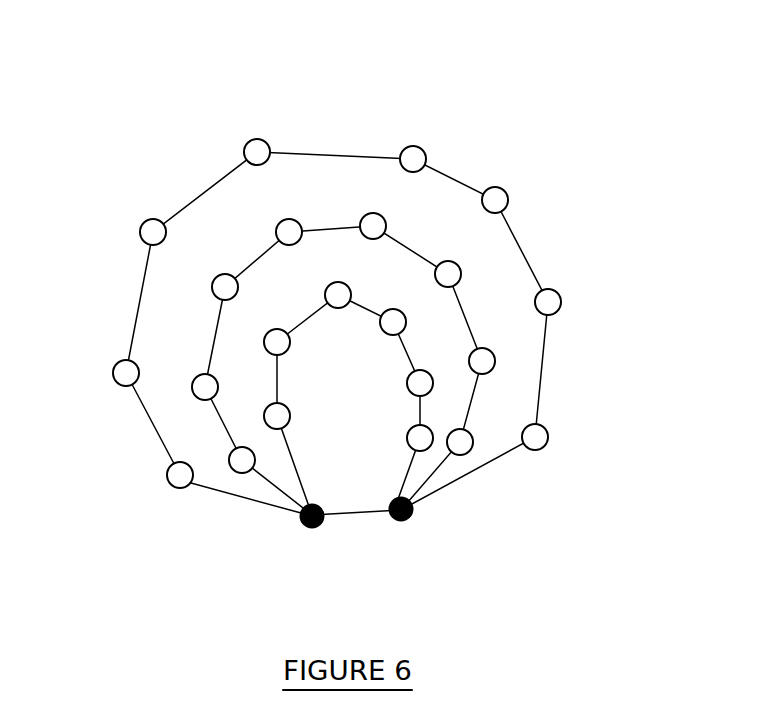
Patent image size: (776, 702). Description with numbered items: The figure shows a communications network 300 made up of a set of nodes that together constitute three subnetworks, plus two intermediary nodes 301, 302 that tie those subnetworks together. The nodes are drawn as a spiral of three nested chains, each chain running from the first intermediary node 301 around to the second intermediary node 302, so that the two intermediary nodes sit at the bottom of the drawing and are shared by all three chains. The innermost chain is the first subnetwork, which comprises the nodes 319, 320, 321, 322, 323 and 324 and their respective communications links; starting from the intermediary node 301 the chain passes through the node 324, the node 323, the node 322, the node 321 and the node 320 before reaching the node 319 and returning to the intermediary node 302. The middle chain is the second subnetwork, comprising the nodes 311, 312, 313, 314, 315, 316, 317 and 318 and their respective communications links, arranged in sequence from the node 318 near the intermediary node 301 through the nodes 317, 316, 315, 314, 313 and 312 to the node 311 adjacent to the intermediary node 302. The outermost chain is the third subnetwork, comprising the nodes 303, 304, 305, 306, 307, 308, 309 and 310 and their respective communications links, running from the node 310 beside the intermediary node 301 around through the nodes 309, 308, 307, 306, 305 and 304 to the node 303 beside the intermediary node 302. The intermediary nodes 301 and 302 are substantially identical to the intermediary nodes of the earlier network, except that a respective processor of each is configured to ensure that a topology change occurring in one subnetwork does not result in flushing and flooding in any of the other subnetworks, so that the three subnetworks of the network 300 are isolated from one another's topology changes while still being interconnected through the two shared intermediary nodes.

The communications network 300 is at (592, 87).
The intermediary node 301 is at (307, 528).
The intermediary node 302 is at (410, 519).
The node 303 is at (548, 435).
The node 304 is at (557, 297).
The node 305 is at (508, 198).
The node 306 is at (426, 155).
The node 307 is at (265, 144).
The node 308 is at (140, 237).
The node 309 is at (118, 383).
The node 310 is at (177, 487).
The node 311 is at (468, 452).
The node 312 is at (495, 361).
The node 313 is at (461, 273).
The node 314 is at (385, 222).
The node 315 is at (292, 220).
The node 316 is at (222, 274).
The node 317 is at (197, 390).
The node 318 is at (254, 457).
The node 319 is at (409, 445).
The node 320 is at (408, 392).
The node 321 is at (406, 322).
The node 322 is at (348, 287).
The node 323 is at (286, 349).
The node 324 is at (288, 409).